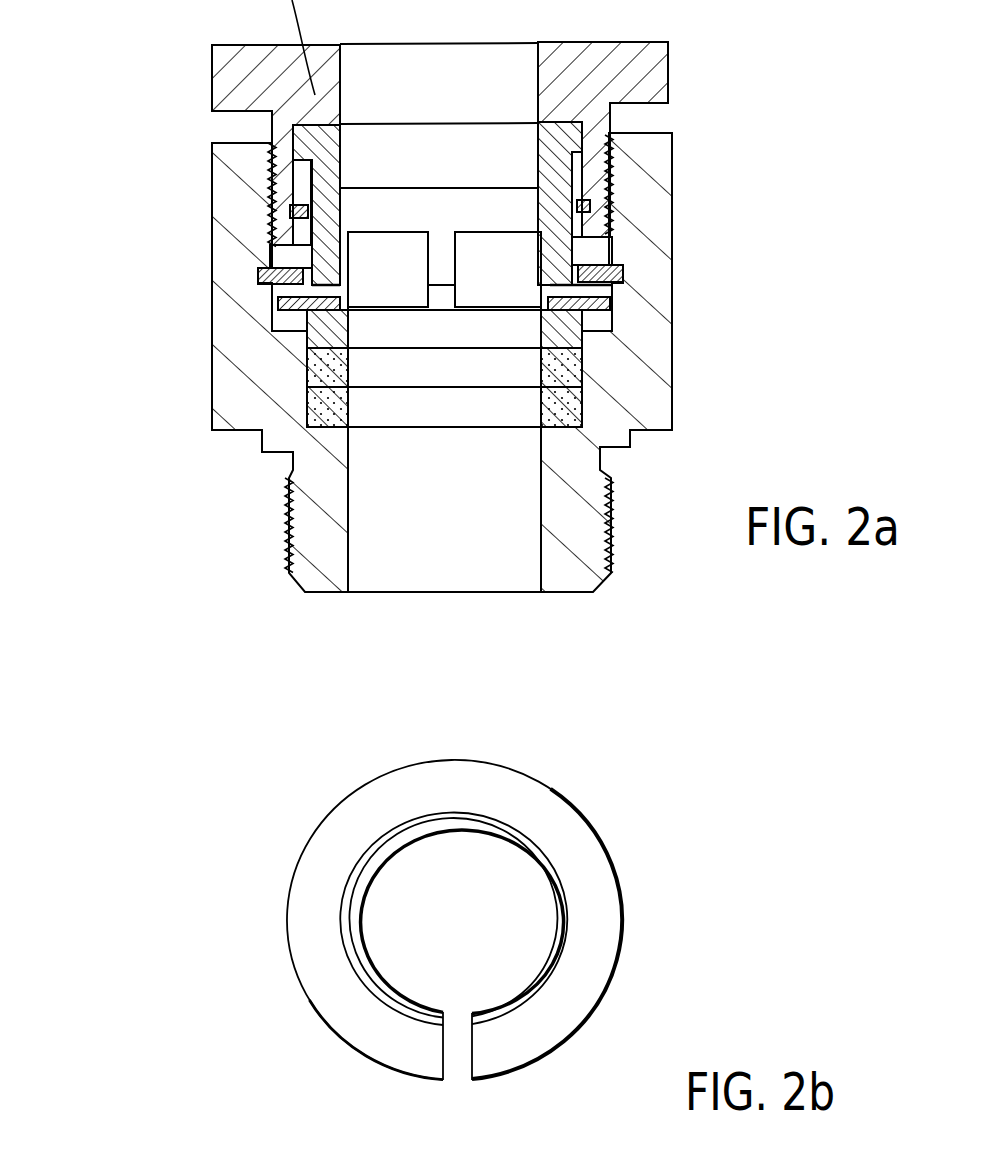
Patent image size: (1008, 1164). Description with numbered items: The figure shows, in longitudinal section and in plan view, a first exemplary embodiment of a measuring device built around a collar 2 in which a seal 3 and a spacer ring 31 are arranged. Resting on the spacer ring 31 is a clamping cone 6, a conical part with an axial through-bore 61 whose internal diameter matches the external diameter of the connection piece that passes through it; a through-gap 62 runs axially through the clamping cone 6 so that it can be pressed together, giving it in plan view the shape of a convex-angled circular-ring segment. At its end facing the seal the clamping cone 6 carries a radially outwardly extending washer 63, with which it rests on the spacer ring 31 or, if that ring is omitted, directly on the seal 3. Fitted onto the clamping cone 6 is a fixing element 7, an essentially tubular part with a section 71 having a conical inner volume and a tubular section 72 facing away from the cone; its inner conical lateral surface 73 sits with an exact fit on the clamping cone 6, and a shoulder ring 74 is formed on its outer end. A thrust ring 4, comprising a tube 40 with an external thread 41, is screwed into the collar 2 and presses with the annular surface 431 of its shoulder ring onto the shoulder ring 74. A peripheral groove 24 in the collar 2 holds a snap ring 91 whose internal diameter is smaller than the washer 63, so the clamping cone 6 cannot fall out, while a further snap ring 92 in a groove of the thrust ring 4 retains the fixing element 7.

In FIG. 2A, the collar 2 is at (130, 262).
In FIG. 2A, the seal 3 is at (322, 372).
In FIG. 2A, the spacer ring 31 is at (320, 355).
In FIG. 2A, the thrust ring 4 is at (225, 75).
In FIG. 2A, the tube 40 is at (277, 141).
In FIG. 2A, the external thread 41 is at (273, 163).
In FIG. 2A, the annular surface 431 is at (578, 134).
In FIG. 2A, the clamping cone 6 is at (612, 290).
In FIG. 2B, the clamping cone 6 is at (283, 783).
In FIG. 2A, the axial through-bore 61 is at (495, 260).
In FIG. 2B, the axial through-bore 61 is at (463, 919).
In FIG. 2B, the through-gap 62 is at (457, 1053).
In FIG. 2A, the washer 63 is at (322, 332).
In FIG. 2B, the washer 63 is at (300, 888).
In FIG. 2A, the fixing element 7 is at (555, 174).
In FIG. 2A, the section with conical inner volume 71 is at (287, 245).
In FIG. 2A, the tubular section 72 is at (317, 167).
In FIG. 2A, the inner conical lateral surface 73 is at (540, 253).
In FIG. 2A, the shoulder ring 74 is at (583, 128).
In FIG. 2A, the snap ring 91 is at (258, 278).
In FIG. 2A, the snap ring 92 is at (293, 213).
In FIG. 2A, the peripheral groove 24 is at (623, 267).